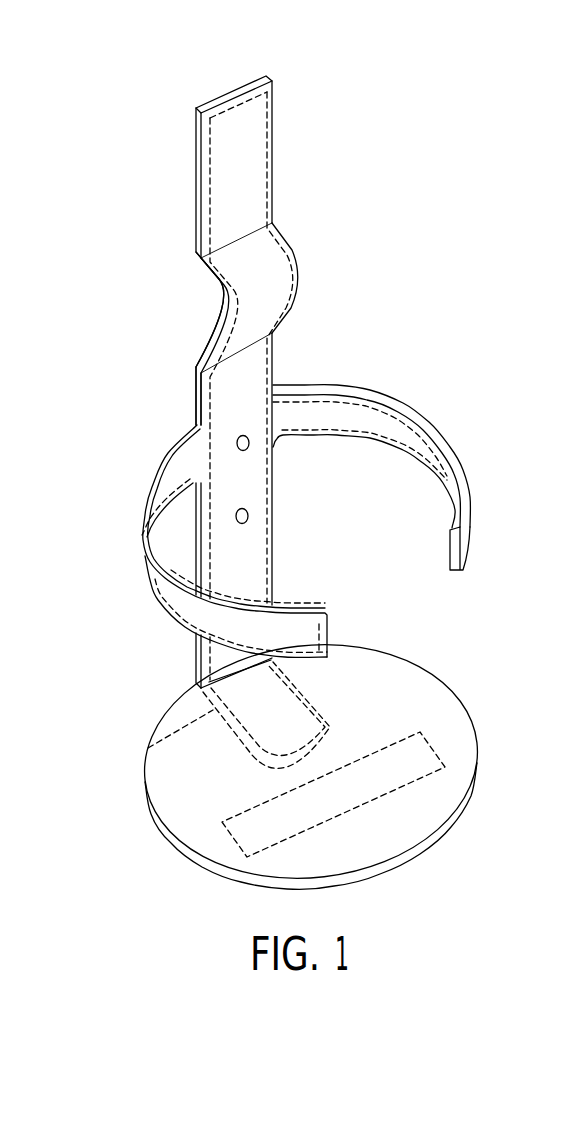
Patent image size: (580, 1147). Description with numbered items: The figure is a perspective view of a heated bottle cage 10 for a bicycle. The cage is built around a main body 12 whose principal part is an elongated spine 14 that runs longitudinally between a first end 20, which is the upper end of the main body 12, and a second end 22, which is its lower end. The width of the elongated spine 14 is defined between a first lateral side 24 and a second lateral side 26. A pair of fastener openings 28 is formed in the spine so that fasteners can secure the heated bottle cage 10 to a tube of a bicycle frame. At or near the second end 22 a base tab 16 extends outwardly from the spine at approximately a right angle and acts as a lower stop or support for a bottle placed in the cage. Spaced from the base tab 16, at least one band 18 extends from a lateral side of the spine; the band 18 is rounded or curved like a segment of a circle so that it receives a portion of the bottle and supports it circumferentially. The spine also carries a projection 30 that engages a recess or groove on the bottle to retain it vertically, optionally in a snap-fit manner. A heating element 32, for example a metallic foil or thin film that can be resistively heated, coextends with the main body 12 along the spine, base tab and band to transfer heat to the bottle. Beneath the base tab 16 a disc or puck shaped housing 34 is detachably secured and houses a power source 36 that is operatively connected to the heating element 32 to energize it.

The heated bottle cage 10 is at (82, 64).
The main body 12 is at (289, 106).
The elongated spine 14 is at (276, 203).
The base tab 16 is at (148, 748).
The band 18 is at (418, 412).
The first end 20 is at (227, 90).
The second end 22 is at (198, 672).
The first lateral side 24 is at (195, 397).
The second lateral side 26 is at (276, 364).
The fastener opening 28 is at (249, 444).
The projection 30 is at (283, 283).
The heating element 32 is at (221, 289).
The housing 34 is at (428, 833).
The power source 36 is at (440, 743).